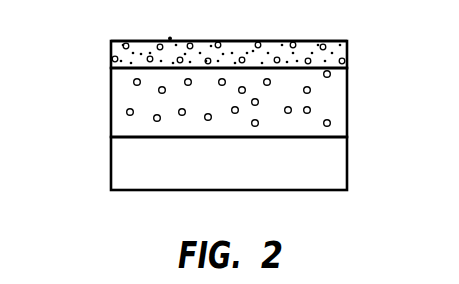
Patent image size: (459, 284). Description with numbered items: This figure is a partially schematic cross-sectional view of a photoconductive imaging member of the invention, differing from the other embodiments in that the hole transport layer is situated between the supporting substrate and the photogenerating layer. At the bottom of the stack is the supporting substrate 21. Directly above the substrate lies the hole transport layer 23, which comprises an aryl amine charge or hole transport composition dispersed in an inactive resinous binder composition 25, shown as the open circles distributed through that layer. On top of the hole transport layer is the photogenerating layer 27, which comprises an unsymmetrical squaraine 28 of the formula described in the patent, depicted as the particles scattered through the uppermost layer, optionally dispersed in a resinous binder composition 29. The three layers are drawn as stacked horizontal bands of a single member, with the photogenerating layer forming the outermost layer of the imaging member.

The supporting substrate 21 is at (348, 165).
The hole transport layer 23 is at (226, 102).
The inactive resinous binder composition 25 is at (126, 112).
The photogenerating layer 27 is at (228, 53).
The unsymmetrical squaraine 28 is at (340, 46).
The resinous binder composition 29 is at (128, 40).